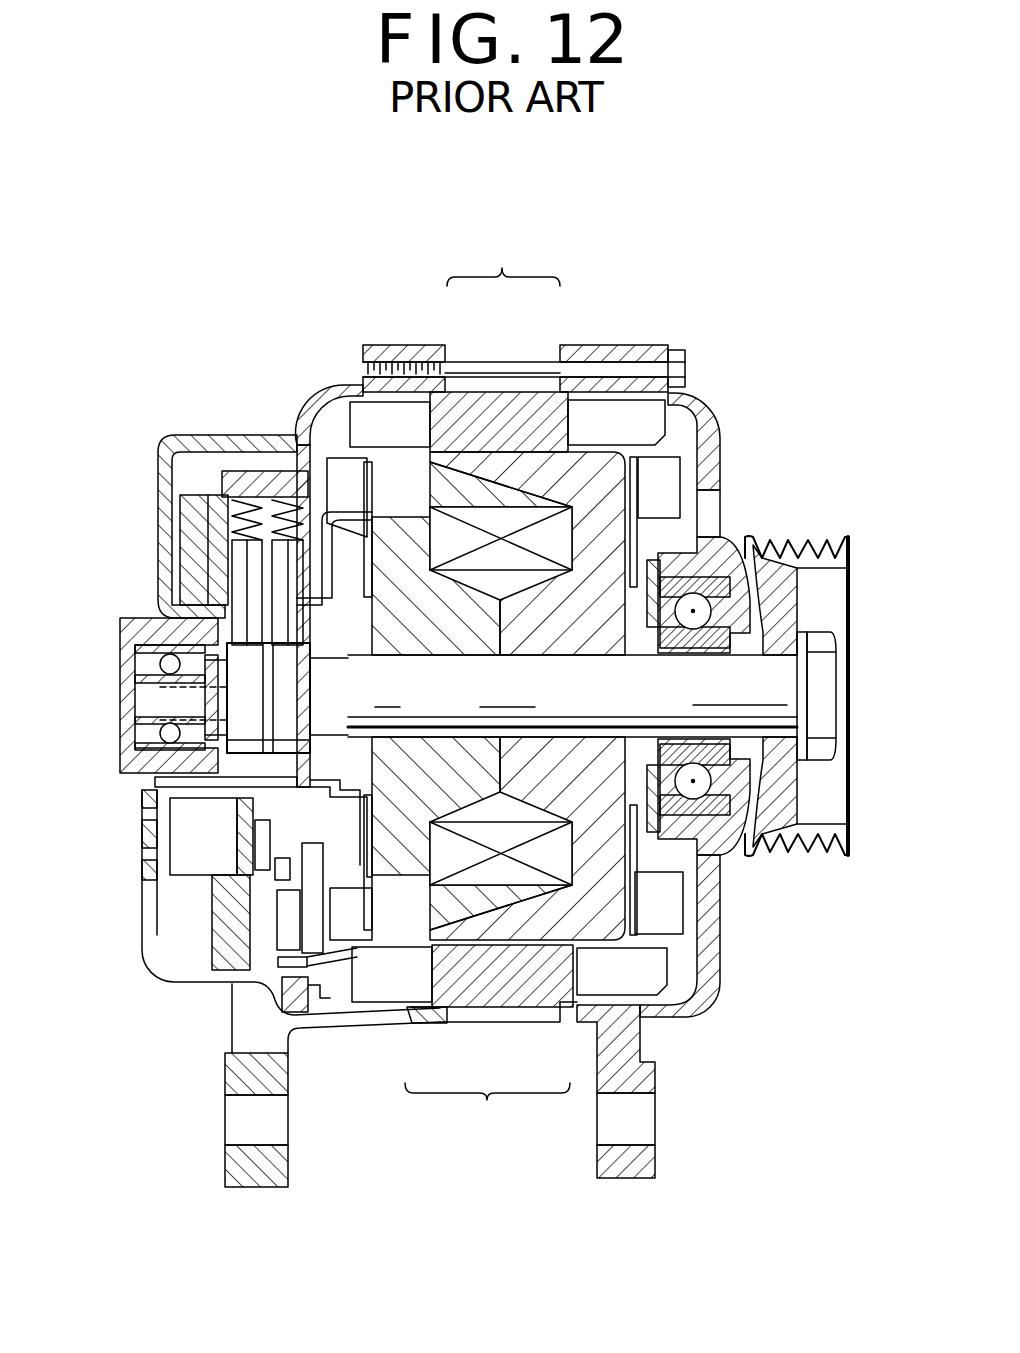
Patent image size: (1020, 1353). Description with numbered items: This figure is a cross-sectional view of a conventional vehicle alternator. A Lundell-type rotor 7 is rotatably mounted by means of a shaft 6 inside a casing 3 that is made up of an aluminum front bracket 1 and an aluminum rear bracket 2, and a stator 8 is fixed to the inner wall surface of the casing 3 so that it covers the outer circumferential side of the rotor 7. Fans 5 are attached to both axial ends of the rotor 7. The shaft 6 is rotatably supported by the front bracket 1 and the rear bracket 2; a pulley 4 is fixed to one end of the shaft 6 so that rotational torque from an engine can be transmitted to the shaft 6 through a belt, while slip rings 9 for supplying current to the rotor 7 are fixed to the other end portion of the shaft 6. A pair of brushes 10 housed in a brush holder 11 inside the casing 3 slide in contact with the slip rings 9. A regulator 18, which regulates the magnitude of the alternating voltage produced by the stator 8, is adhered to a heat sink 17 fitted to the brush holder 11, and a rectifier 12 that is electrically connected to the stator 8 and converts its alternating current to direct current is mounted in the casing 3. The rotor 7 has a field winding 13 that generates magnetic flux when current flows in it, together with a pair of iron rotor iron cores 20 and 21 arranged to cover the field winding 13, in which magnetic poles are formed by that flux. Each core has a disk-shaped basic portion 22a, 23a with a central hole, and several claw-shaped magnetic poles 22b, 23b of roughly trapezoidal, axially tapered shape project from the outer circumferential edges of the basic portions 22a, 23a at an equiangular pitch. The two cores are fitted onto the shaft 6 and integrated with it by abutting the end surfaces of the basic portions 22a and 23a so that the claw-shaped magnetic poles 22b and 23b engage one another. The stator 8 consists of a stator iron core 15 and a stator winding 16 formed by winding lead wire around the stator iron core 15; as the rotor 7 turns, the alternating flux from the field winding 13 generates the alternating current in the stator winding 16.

The front bracket 1 is at (712, 937).
The rear bracket 2 is at (157, 982).
The casing 3 is at (713, 1007).
The pulley 4 is at (815, 540).
The fans 5 is at (668, 475).
The shaft 6 is at (767, 675).
The rotor 7 is at (473, 1135).
The stator 8 is at (482, 247).
The slip rings 9 is at (237, 685).
The brushes 10 is at (247, 563).
The brush holder 11 is at (255, 482).
The rectifier 12 is at (190, 885).
The field winding 13 is at (488, 877).
The stator iron core 15 is at (480, 395).
The stator winding 16 is at (590, 420).
The heat sink 17 is at (187, 513).
The regulator 18 is at (210, 487).
The rotor iron core 20 is at (563, 920).
The rotor iron core 21 is at (410, 920).
The basic portion 22a is at (545, 625).
The claw-shaped magnetic poles 22b is at (613, 467).
The basic portion 23a is at (440, 625).
The claw-shaped magnetic poles 23b is at (387, 465).